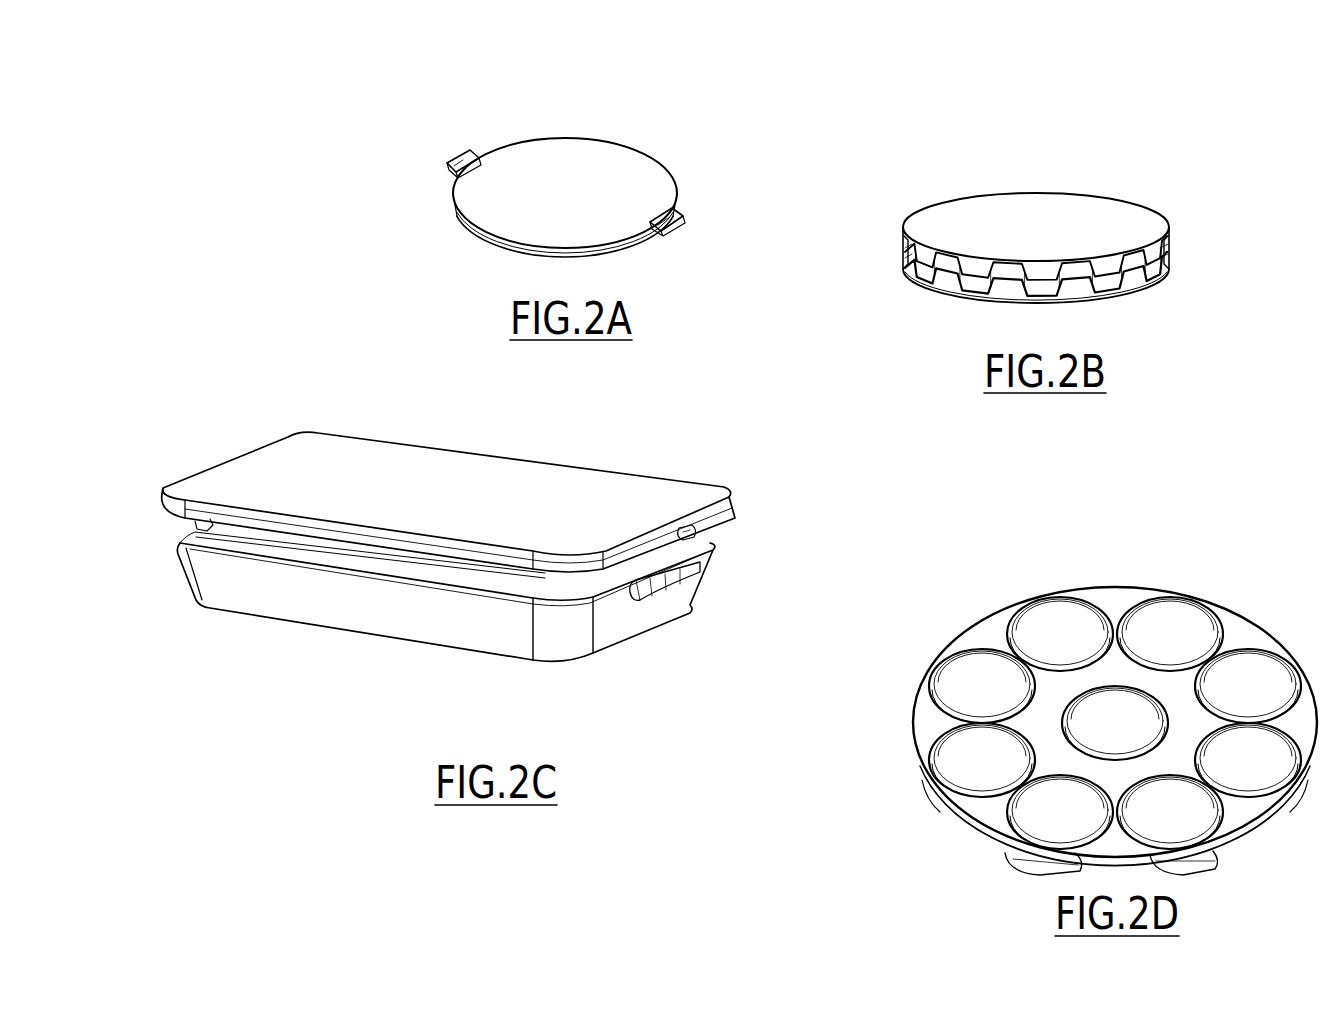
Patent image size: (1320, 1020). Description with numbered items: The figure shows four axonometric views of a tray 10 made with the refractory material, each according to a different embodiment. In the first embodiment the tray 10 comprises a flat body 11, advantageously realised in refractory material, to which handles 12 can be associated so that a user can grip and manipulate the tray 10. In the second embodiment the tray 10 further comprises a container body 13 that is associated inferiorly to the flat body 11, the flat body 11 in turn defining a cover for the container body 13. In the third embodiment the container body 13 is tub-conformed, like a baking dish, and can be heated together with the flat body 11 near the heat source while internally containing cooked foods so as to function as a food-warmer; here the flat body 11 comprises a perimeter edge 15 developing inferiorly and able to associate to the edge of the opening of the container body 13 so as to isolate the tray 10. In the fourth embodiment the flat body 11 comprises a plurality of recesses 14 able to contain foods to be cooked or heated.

In FIG. 2A, the tray 10 is at (428, 176).
In FIG. 2B, the tray 10 is at (886, 204).
In FIG. 2C, the tray 10 is at (191, 407).
In FIG. 2D, the tray 10 is at (1098, 566).
In FIG. 2A, the flat body 11 is at (566, 141).
In FIG. 2B, the flat body 11 is at (1113, 207).
In FIG. 2C, the flat body 11 is at (610, 497).
In FIG. 2D, the flat body 11 is at (1238, 633).
In FIG. 2A, the handles 12 is at (679, 208).
In FIG. 2B, the container body 13 is at (1140, 287).
In FIG. 2C, the container body 13 is at (235, 597).
In FIG. 2D, the recesses 14 is at (973, 698).
In FIG. 2B, the perimeter edge 15 is at (904, 238).
In FIG. 2C, the perimeter edge 15 is at (735, 511).